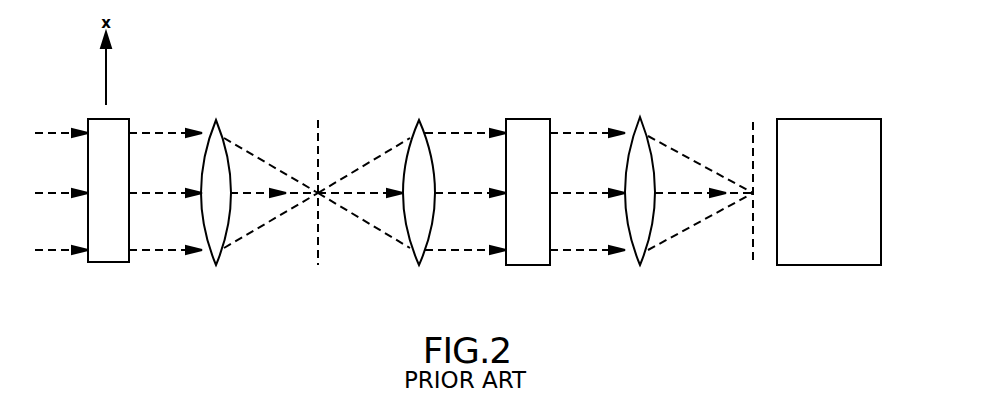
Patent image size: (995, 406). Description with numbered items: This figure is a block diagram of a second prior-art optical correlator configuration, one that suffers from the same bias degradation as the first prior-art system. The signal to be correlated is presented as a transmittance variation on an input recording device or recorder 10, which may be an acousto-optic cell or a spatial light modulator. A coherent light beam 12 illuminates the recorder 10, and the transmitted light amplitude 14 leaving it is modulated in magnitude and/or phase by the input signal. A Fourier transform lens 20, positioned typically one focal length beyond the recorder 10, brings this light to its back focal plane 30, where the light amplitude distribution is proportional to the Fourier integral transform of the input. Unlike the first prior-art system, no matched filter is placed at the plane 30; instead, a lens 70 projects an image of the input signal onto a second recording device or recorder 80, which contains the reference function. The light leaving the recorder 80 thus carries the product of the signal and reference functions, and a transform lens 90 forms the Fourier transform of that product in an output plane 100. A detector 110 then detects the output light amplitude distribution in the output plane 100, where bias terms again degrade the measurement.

The recorder 10 is at (195, 300).
The coherent light beam 12 is at (61, 191).
The light amplitude 14 is at (165, 191).
The Fourier transform lens 20 is at (218, 124).
The back focal plane 30 is at (322, 125).
The lens 70 is at (421, 125).
The recorder 80 is at (533, 255).
The transform lens 90 is at (644, 128).
The output plane 100 is at (752, 257).
The detector 110 is at (820, 257).